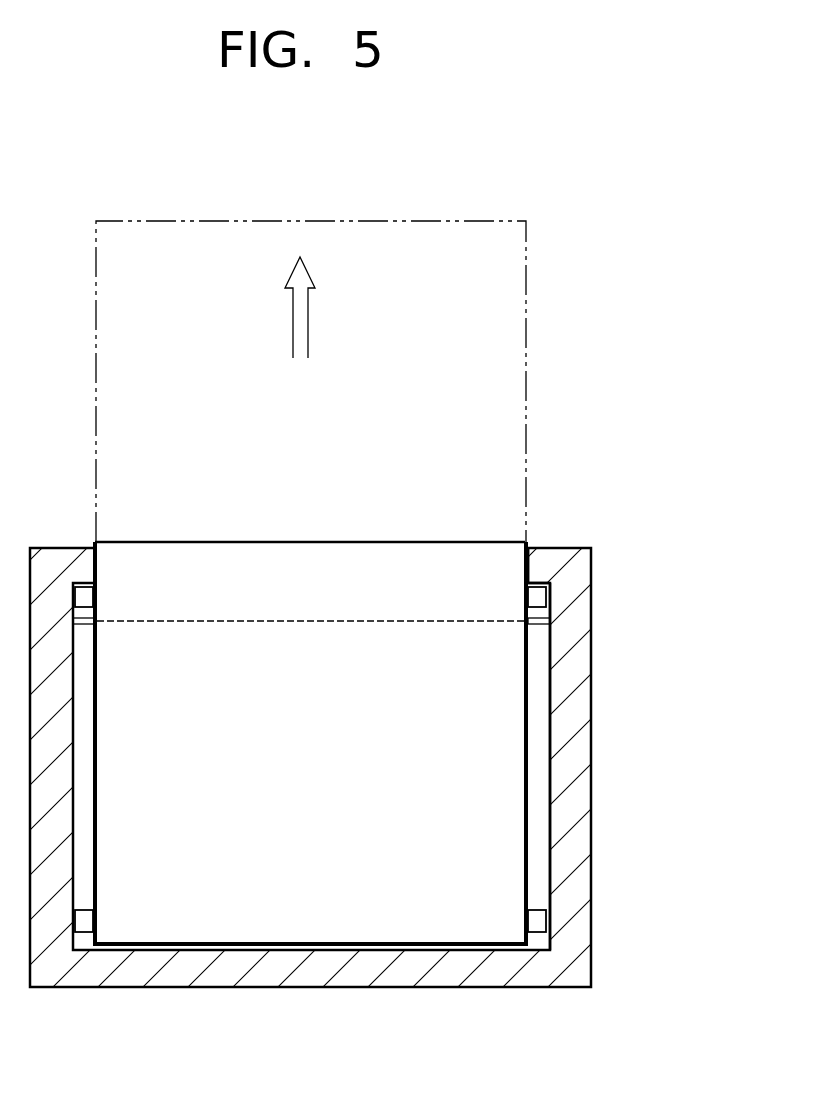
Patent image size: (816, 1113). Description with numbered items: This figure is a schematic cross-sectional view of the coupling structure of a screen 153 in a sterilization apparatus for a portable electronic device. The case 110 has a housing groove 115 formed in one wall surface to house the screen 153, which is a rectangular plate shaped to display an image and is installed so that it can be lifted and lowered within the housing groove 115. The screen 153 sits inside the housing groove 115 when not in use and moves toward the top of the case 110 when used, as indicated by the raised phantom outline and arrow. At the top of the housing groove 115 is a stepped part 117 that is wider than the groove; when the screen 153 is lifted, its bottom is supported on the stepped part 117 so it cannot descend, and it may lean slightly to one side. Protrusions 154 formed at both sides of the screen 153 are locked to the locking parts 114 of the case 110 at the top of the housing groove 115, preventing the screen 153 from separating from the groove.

The case 110 is at (594, 588).
The locking part 114 is at (537, 568).
The housing groove 115 is at (536, 810).
The stepped part 117 is at (553, 613).
The screen 153 is at (485, 723).
The protrusion 154 is at (535, 598).